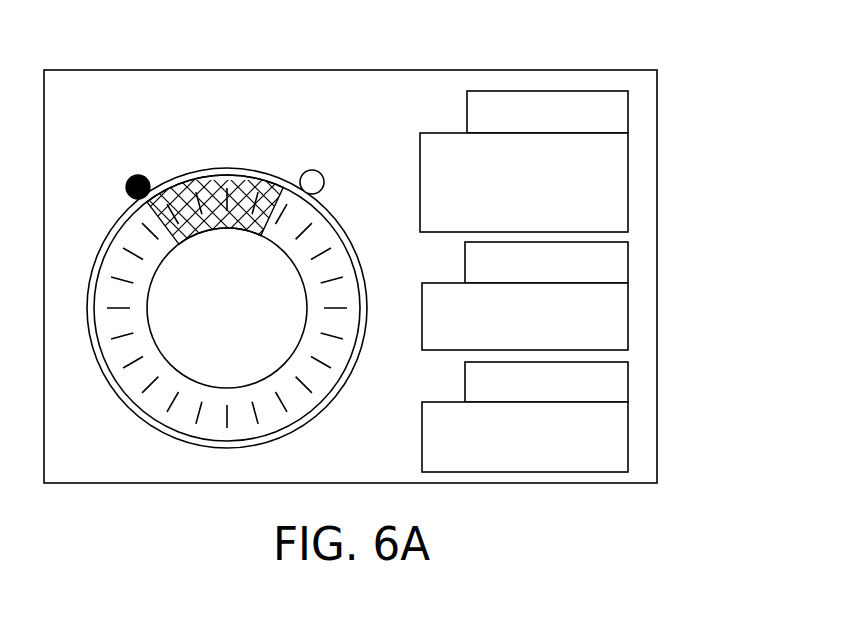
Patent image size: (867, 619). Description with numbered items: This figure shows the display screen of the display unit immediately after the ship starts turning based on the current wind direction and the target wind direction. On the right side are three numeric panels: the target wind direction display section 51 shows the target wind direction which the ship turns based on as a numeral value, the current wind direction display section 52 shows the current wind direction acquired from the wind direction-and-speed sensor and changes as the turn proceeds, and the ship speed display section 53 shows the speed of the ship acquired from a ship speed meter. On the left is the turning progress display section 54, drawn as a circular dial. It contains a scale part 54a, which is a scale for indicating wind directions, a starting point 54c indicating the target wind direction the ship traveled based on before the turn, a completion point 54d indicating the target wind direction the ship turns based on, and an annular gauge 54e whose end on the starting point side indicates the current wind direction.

The turning progress display section 54 is at (225, 125).
The scale part 54a is at (340, 357).
The starting point 54c is at (313, 170).
The completion point 54d is at (137, 177).
The annular gauge 54e is at (192, 193).
The target wind direction display section 51 is at (640, 161).
The current wind direction display section 52 is at (641, 291).
The ship speed display section 53 is at (641, 406).